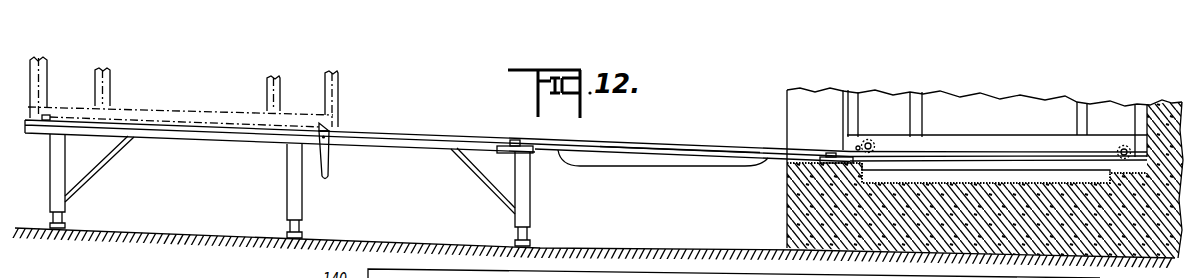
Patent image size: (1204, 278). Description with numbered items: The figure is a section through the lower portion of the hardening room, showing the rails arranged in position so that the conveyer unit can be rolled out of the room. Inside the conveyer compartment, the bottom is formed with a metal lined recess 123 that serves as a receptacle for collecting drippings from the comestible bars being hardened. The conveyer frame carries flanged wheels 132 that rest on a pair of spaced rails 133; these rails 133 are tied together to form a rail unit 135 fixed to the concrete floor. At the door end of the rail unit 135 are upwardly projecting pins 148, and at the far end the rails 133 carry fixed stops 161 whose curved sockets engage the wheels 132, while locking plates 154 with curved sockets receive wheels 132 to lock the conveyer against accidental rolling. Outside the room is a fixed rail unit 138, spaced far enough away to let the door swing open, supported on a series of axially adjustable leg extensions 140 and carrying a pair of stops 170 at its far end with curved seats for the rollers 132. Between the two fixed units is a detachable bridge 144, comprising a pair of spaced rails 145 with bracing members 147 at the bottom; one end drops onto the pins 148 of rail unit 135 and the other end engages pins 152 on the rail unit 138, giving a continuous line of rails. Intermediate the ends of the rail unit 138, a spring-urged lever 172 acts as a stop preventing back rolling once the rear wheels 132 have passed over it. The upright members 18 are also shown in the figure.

The upright posts 18 is at (341, 90).
The stops 170 is at (47, 115).
The rail unit 138 is at (396, 134).
The lever 172 is at (329, 172).
The axially adjustable leg extensions 140 is at (66, 219).
The pins 152 is at (516, 143).
The detachable bridge 144 is at (648, 141).
The spaced rails 145 is at (713, 150).
The bracing members 147 is at (647, 163).
The metal lined recess 123 is at (1042, 177).
The rail unit 135 is at (955, 166).
The rails 133 is at (1007, 160).
The upwardly projecting pins 148 is at (856, 159).
The locking plates 154 is at (856, 146).
The flanged wheels 132 is at (873, 139).
The fixed stops 161 is at (1133, 130).